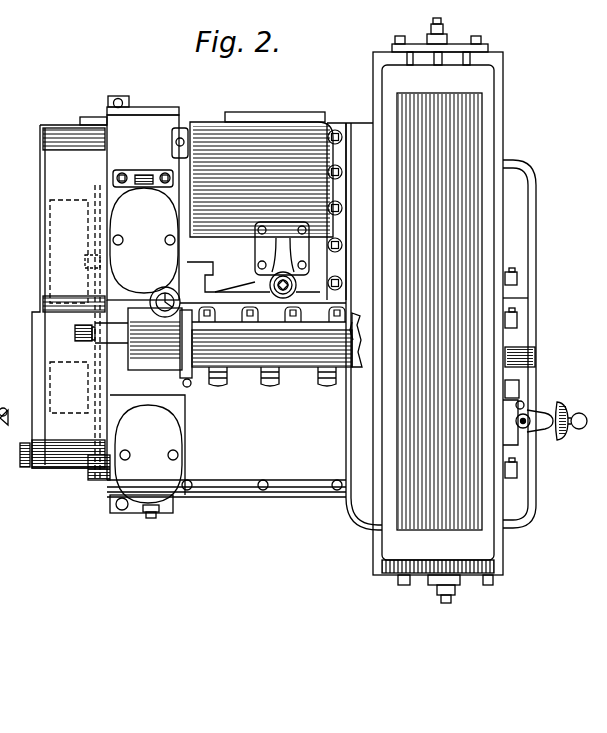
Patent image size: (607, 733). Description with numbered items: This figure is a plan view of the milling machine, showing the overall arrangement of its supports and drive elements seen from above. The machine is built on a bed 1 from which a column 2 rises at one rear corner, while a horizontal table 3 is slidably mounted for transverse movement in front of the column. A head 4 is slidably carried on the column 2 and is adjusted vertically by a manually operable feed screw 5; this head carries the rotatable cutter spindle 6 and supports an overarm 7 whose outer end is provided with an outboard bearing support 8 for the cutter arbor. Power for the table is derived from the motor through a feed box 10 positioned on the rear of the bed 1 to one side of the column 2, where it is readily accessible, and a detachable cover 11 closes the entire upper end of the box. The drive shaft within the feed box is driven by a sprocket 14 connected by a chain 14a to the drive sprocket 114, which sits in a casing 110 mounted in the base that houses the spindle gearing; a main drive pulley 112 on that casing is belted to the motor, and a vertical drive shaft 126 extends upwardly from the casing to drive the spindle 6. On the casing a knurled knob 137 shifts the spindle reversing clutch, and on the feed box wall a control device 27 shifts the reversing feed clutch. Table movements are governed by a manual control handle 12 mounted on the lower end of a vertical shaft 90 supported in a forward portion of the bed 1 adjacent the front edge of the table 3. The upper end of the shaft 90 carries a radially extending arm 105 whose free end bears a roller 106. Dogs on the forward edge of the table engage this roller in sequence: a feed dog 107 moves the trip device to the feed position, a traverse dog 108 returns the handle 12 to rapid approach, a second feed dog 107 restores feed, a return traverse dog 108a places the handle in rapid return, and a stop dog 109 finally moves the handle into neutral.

The bed 1 is at (310, 497).
The column 2 is at (272, 140).
The table 3 is at (490, 118).
The head 4 is at (248, 370).
The feed screw 5 is at (270, 287).
The cutter spindle 6 is at (365, 428).
The overarm 7 is at (360, 368).
The outboard bearing support 8 is at (145, 172).
The feed box 10 is at (247, 497).
The detachable cover 11 is at (213, 497).
The manual control handle 12 is at (567, 412).
The sprocket 14 is at (84, 487).
The chain 14a is at (88, 362).
The control device 27 is at (153, 518).
The vertical shaft 90 is at (527, 430).
The arm 105 is at (528, 418).
The roller 106 is at (521, 392).
The feed dog 107 is at (520, 320).
The traverse dog 108 is at (532, 356).
The return traverse dog 108a is at (518, 278).
The stop dog 109 is at (518, 478).
The casing 110 is at (124, 194).
The main drive pulley 112 is at (58, 245).
The drive sprocket 114 is at (95, 240).
The vertical drive shaft 126 is at (164, 288).
The knurled knob 137 is at (130, 173).